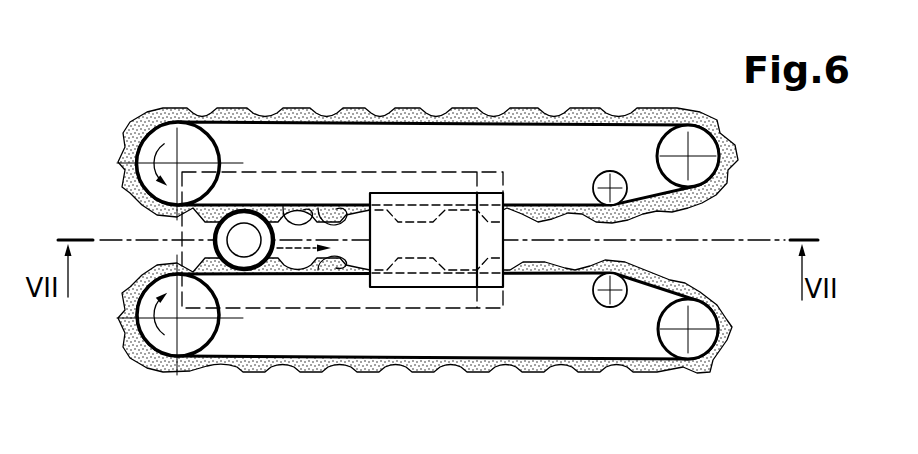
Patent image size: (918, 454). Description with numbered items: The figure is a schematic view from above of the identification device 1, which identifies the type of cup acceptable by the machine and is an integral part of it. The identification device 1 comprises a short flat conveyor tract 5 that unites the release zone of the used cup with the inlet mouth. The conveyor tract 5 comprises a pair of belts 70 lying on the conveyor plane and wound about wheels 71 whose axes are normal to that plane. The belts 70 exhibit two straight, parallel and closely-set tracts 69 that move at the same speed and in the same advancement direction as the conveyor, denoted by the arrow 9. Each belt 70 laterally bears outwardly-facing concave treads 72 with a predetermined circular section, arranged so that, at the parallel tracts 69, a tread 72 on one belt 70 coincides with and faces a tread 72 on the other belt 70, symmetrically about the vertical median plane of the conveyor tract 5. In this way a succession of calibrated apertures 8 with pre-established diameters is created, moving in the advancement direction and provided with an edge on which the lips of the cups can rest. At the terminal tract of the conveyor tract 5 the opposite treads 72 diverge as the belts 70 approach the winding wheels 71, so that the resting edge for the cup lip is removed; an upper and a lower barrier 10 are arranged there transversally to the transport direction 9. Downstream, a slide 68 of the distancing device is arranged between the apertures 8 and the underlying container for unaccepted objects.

The identification device 1 is at (84, 188).
The conveyor tract 5 is at (150, 252).
The calibrated apertures 8 is at (283, 208).
The arrow (advancement direction) 9 is at (284, 262).
The upper and lower barrier 10 is at (440, 192).
The slide 68 is at (475, 366).
The parallel tracts 69 is at (317, 208).
The belts 70 is at (368, 112).
The wheels 71 is at (208, 115).
The concave treads 72 is at (632, 112).